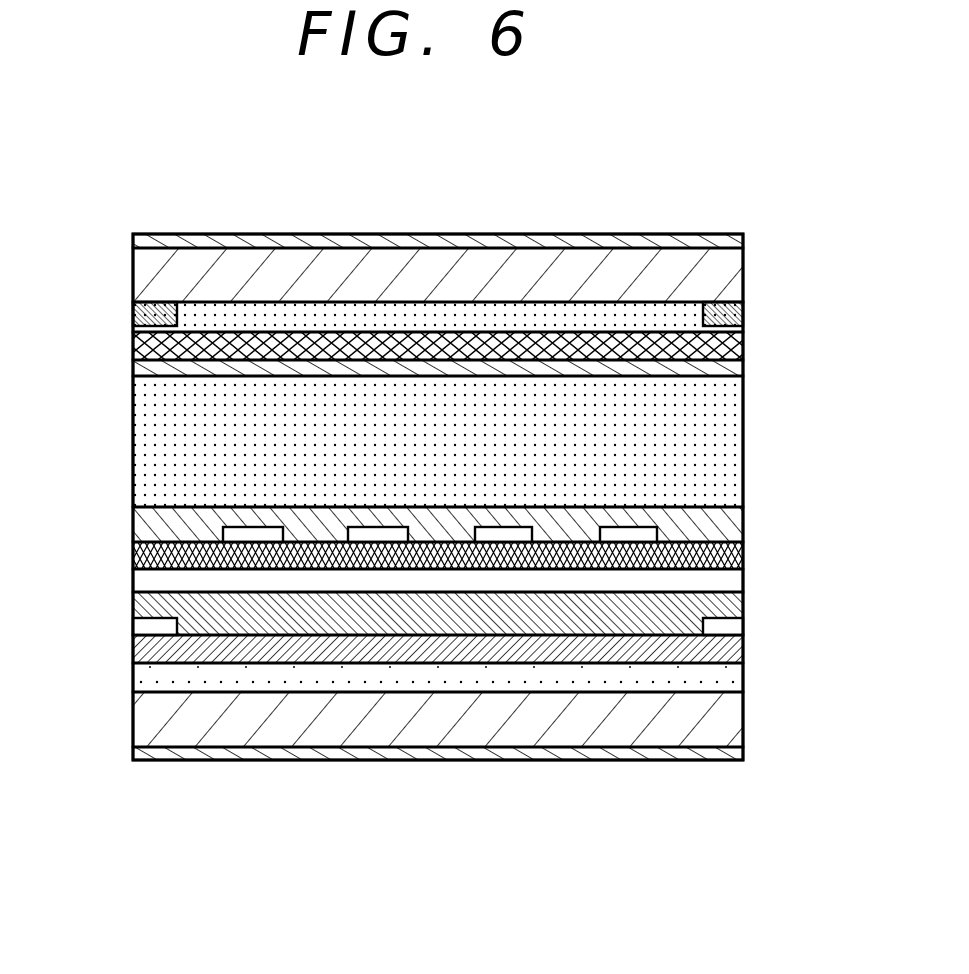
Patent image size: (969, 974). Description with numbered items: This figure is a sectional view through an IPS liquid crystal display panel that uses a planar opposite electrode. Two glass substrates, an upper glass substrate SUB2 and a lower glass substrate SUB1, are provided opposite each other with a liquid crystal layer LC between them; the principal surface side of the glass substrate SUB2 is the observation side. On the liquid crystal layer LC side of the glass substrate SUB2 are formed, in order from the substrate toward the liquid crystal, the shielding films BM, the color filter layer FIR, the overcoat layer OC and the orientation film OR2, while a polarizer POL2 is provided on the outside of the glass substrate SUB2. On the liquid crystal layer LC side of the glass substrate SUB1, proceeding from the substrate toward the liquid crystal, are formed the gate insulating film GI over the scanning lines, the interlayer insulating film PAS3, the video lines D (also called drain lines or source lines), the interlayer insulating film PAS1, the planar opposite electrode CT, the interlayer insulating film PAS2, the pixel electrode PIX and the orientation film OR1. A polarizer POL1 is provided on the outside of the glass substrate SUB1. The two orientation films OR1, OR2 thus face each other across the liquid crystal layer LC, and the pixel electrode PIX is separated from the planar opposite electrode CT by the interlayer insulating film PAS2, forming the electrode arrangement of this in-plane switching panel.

The polarizer POL2 is at (157, 236).
The glass substrate SUB2 is at (732, 280).
The color filter layer FIR is at (658, 318).
The shielding films BM is at (133, 315).
The overcoat layer OC is at (133, 345).
The orientation film OR2 is at (732, 366).
The liquid crystal layer LC is at (720, 446).
The orientation film OR1 is at (725, 522).
The pixel electrode PIX is at (627, 535).
The interlayer insulating film PAS2 is at (504, 540).
The planar opposite electrode CT is at (720, 578).
The interlayer insulating film PAS1 is at (377, 620).
The video lines D is at (145, 627).
The interlayer insulating film PAS3 is at (263, 663).
The gate insulating film GI is at (730, 672).
The glass substrate SUB1 is at (732, 711).
The polarizer POL1 is at (140, 755).